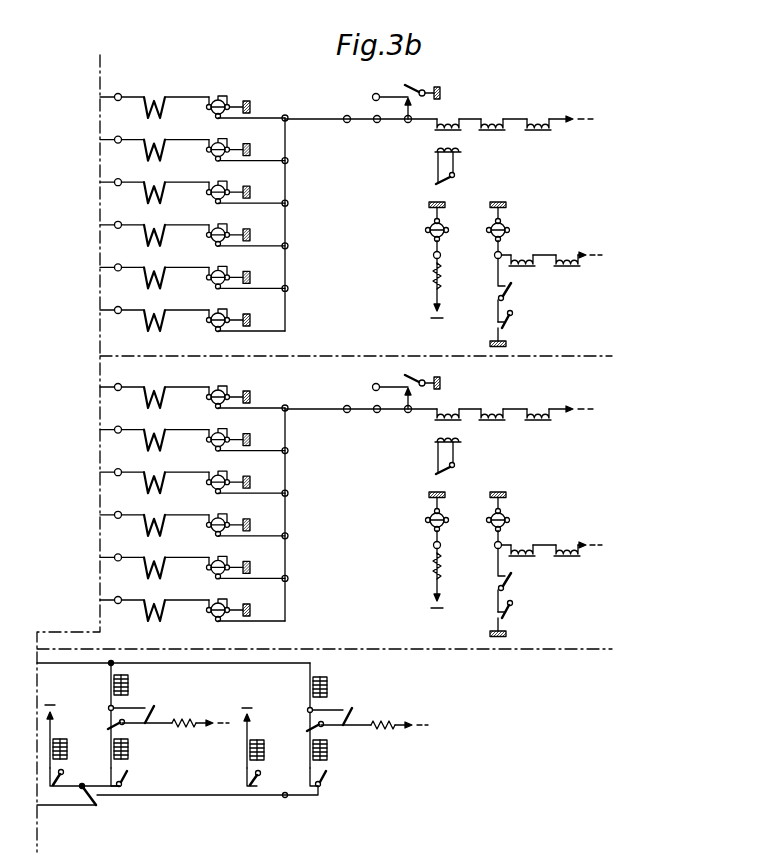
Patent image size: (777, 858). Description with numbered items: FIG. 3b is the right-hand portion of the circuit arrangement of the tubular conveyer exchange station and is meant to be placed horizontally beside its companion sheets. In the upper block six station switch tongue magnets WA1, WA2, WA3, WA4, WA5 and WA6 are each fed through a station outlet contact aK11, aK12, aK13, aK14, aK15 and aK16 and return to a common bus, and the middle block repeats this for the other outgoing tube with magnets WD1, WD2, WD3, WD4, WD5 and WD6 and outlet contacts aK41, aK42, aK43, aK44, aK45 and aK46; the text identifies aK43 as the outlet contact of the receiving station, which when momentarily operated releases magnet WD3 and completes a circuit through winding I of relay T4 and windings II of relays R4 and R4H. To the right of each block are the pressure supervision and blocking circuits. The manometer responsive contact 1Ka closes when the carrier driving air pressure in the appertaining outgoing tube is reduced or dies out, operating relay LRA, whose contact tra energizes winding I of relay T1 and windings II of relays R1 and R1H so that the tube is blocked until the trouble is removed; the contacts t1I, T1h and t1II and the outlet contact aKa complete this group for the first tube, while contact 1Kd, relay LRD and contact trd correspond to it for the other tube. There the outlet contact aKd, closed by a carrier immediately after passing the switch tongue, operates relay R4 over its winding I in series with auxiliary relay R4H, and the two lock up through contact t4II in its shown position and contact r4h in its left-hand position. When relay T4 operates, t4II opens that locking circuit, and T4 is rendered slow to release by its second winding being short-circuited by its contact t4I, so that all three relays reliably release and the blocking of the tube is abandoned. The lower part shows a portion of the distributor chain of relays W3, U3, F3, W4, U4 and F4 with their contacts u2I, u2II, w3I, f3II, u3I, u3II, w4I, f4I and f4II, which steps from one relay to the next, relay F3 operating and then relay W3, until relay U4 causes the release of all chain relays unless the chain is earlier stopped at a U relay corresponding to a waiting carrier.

The track resistor WA1 is at (136, 98).
The track resistor WA2 is at (136, 141).
The track resistor WA3 is at (136, 183).
The track resistor WA4 is at (136, 226).
The track resistor WA5 is at (136, 268).
The track resistor WA6 is at (136, 311).
The relay aK11 is at (227, 99).
The relay aK12 is at (227, 142).
The relay aK13 is at (227, 184).
The relay aK14 is at (227, 227).
The relay aK15 is at (227, 269).
The relay aK16 is at (225, 311).
The contact of relay LRA tra is at (407, 92).
The relay T1 is at (444, 141).
The contact t1 I t1I is at (452, 186).
The relay R1 is at (507, 190).
The relay R1H is at (563, 190).
The manometer responsive contact 1Ka is at (451, 233).
The relay LRA is at (457, 290).
The relay aKa is at (512, 230).
The contact T1h is at (517, 291).
The contact t1 II t1II is at (509, 329).
The track resistor WD1 is at (137, 388).
The track resistor WD2 is at (137, 431).
The switch tongue magnet WD3 is at (137, 473).
The track resistor WD4 is at (137, 516).
The track resistor WD5 is at (137, 558).
The track resistor WD6 is at (137, 601).
The relay aK41 is at (227, 389).
The relay aK42 is at (227, 432).
The outlet contact aK43 is at (227, 474).
The relay aK44 is at (227, 517).
The relay aK45 is at (227, 559).
The relay aK46 is at (225, 601).
The switch trd is at (407, 382).
The relay T4 is at (444, 431).
The contact of relay T4 t4I is at (452, 476).
The relay R4 is at (507, 480).
The auxiliary relay R4H is at (563, 480).
The relay 1Kd is at (451, 523).
The resistor LRD is at (457, 580).
The outlet contact aKd is at (512, 520).
The contact of relay R4H r4h is at (514, 581).
The contact of relay T4 t4II is at (509, 619).
The distributor chain relay F3 is at (128, 687).
The contact f3 II f3II is at (172, 711).
The contact u2 II u2II is at (101, 722).
The coil U3 is at (129, 748).
The contact w3 I w3I is at (130, 781).
The distributor chain relay W3 is at (67, 736).
The contact u2 I u2I is at (85, 777).
The contact f4 I f4I is at (71, 810).
The coil F4 is at (327, 688).
The contact f4 II f4II is at (371, 713).
The contact u3 II u3II is at (300, 724).
The distributor chain relay U4 is at (328, 749).
The contact w4 I w4I is at (329, 781).
The coil W4 is at (264, 738).
The contact u3 I u3I is at (264, 778).